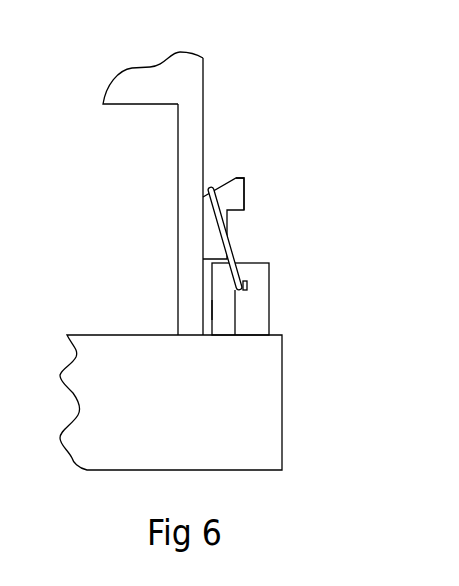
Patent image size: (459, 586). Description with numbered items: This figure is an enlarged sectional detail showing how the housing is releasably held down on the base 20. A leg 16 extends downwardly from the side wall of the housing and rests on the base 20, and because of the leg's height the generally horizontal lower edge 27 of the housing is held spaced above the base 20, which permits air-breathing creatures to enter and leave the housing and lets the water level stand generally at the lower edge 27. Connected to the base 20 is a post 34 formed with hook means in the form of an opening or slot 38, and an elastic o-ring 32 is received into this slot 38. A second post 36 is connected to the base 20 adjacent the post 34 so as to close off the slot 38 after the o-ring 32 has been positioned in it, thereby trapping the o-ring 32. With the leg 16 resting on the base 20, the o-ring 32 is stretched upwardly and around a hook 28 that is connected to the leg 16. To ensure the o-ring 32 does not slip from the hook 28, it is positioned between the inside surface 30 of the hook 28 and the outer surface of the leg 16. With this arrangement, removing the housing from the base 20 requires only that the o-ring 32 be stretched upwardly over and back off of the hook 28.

The leg 16 is at (203, 122).
The base 20 is at (282, 367).
The lower edge 27 is at (138, 105).
The hook 28 is at (244, 195).
The inside surface 30 is at (226, 178).
The o-ring 32 is at (233, 246).
The post 34 is at (270, 287).
The post 36 is at (212, 311).
The slot 38 is at (248, 290).